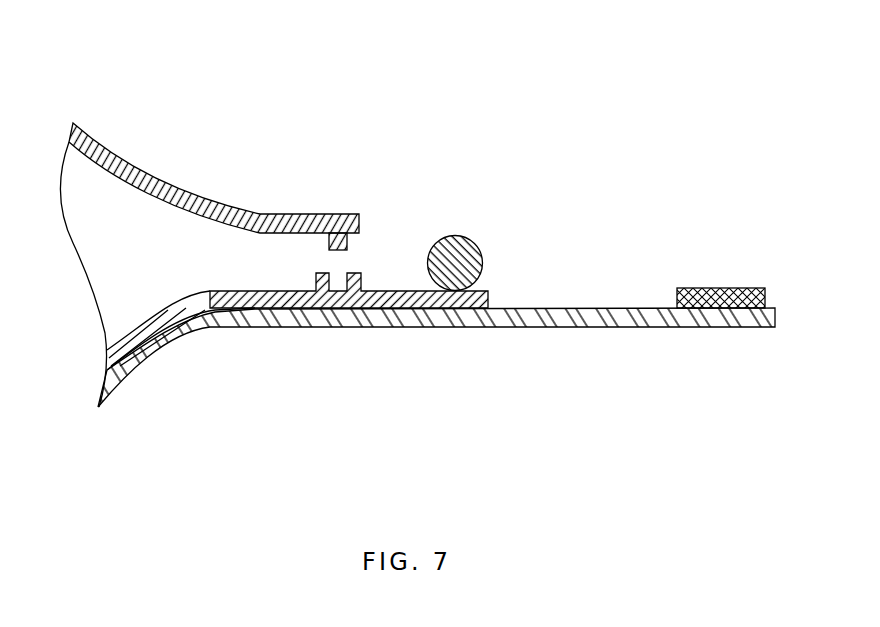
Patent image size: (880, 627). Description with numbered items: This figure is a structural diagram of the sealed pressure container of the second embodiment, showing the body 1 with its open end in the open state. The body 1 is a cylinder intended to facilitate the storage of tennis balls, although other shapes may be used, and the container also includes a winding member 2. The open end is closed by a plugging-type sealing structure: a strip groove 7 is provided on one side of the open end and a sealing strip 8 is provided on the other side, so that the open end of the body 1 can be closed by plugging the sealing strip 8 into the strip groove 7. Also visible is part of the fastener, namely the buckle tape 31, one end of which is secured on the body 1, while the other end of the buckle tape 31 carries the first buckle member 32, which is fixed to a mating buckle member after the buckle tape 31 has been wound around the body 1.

The body 1 is at (108, 150).
The winding member 2 is at (453, 256).
The strip groove 7 is at (338, 282).
The sealing strip 8 is at (339, 248).
The buckle tape 31 is at (573, 318).
The first buckle member 32 is at (705, 297).